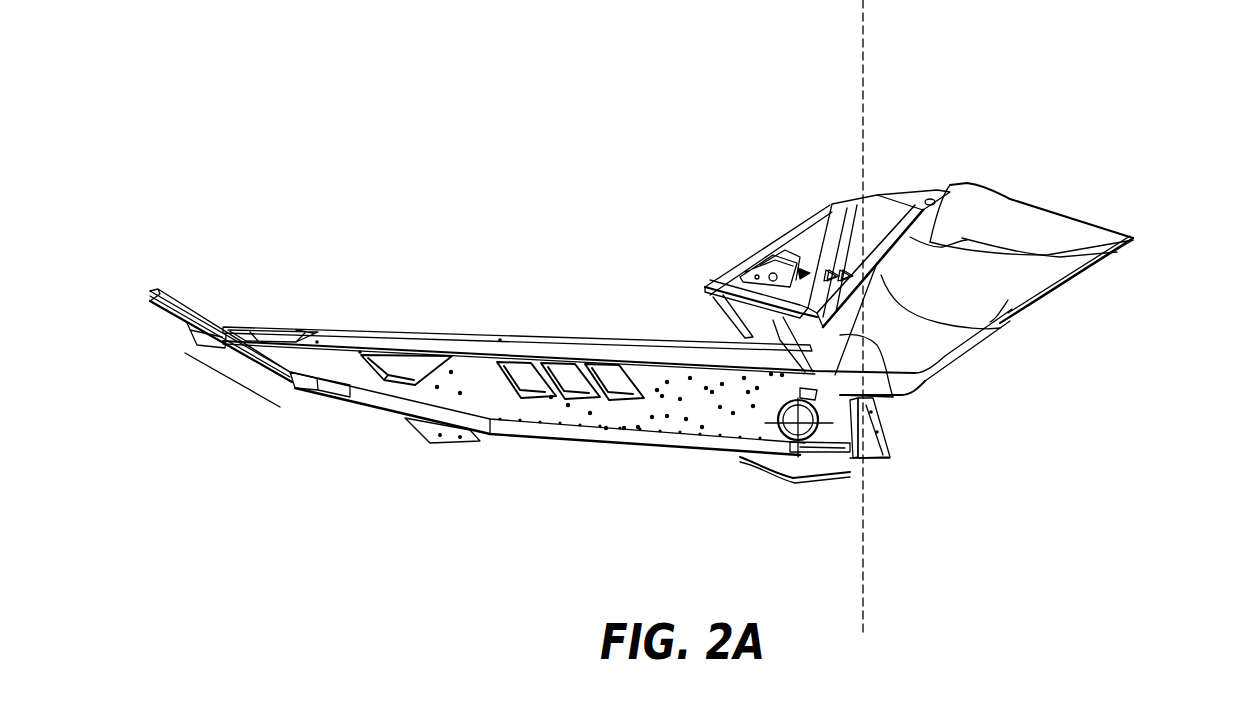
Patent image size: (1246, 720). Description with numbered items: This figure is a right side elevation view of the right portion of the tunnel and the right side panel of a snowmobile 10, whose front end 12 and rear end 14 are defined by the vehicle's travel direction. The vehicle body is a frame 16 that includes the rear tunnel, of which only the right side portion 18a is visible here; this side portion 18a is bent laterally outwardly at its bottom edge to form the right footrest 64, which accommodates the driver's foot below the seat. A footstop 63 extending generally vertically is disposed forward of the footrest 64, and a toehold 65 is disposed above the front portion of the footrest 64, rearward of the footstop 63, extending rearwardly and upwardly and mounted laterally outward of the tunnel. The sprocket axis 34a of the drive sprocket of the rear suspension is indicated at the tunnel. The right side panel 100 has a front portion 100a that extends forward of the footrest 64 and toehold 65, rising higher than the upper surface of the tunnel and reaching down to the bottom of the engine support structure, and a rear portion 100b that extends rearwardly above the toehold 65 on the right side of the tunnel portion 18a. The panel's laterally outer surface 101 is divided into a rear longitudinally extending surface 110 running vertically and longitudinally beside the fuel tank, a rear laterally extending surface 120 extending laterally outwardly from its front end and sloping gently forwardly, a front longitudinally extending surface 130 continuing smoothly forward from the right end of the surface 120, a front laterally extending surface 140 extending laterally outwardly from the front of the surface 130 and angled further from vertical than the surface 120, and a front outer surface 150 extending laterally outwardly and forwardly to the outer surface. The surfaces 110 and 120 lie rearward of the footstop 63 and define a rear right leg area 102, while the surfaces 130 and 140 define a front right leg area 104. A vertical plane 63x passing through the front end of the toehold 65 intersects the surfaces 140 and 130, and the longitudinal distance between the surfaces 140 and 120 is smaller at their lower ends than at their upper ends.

The snowmobile 10 is at (516, 75).
The front end 12 is at (1088, 60).
The rear end 14 is at (218, 113).
The frame 16 is at (420, 422).
The right side portion 18a is at (466, 378).
The sprocket axis 34a is at (788, 447).
The footstop 63 is at (883, 453).
The vertical plane 63x is at (866, 76).
The footrest 64 is at (560, 437).
The toehold 65 is at (855, 458).
The right side panel 100 is at (1040, 178).
The front portion 100a is at (1027, 278).
The rear portion 100b is at (735, 293).
The laterally outer surface 101 is at (1000, 327).
The rear right leg area 102 is at (752, 270).
The front right leg area 104 is at (848, 262).
The rear longitudinally extending surface 110 is at (780, 270).
The rear laterally extending surface 120 is at (826, 268).
The front longitudinally extending surface 130 is at (807, 247).
The front laterally extending surface 140 is at (980, 303).
The front outer surface 150 is at (893, 397).